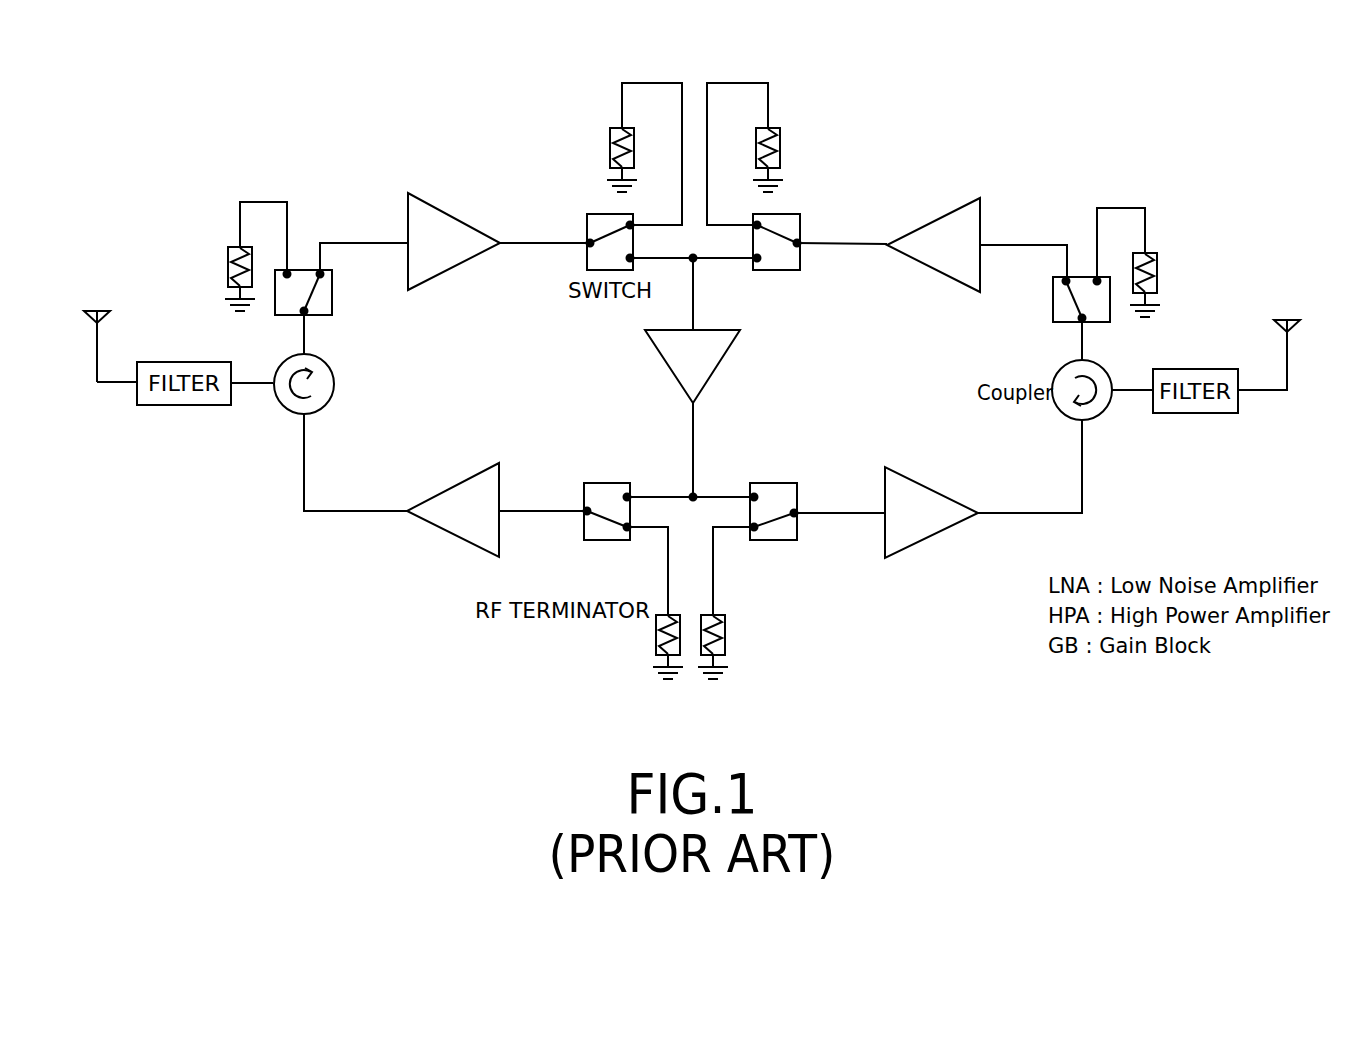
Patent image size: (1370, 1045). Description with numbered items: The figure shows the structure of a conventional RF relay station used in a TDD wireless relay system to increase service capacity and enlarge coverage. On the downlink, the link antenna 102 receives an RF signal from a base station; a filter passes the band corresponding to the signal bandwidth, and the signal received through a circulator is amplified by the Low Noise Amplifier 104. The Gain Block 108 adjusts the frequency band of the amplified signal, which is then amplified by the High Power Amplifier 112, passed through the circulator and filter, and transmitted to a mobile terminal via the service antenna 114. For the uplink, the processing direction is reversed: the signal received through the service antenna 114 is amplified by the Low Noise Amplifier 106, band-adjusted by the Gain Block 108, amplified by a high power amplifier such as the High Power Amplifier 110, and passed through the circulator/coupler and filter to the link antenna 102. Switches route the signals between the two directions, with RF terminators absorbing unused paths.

The link antenna 102 is at (97, 316).
The Low Noise Amplifier (LNA) 104 is at (451, 213).
The Low Noise Amplifier (LNA) 106 is at (930, 220).
The Gain Block (GB) 108 is at (718, 361).
The High Power Amplifier (HPA) 110 is at (450, 486).
The High Power Amplifier (HPA) 112 is at (927, 490).
The service antenna 114 is at (1289, 325).